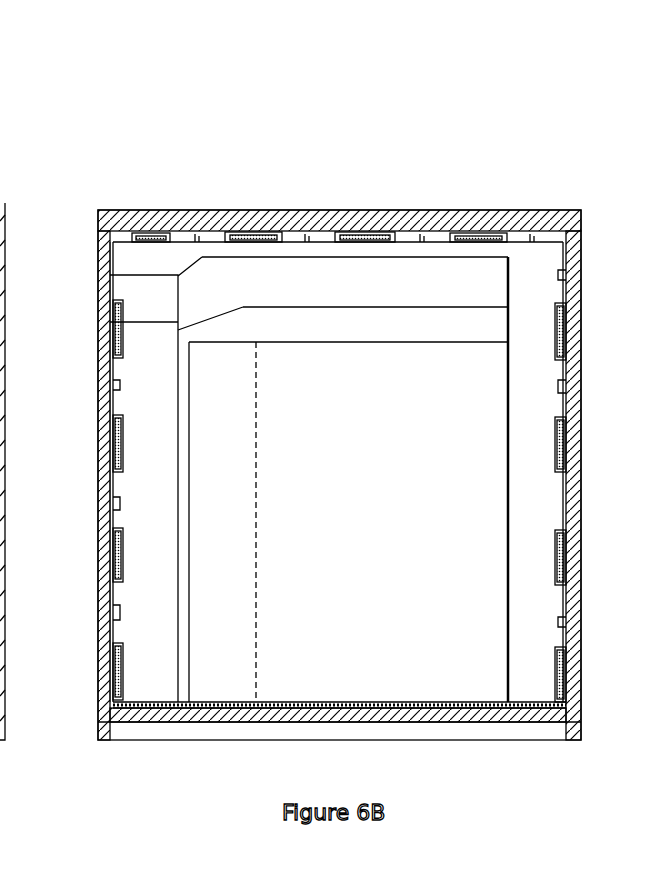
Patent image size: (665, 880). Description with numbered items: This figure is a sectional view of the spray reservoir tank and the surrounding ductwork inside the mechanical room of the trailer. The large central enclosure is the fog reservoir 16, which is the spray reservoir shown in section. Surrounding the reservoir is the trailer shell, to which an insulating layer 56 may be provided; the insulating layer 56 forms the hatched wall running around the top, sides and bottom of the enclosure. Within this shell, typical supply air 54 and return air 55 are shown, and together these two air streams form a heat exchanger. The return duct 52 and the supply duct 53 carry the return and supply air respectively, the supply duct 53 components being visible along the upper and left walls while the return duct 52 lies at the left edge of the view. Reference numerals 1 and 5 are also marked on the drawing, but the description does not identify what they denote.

The apparatus 1 is at (608, 118).
The right side module components 5 is at (542, 450).
The fog reservoir 16 is at (350, 494).
The return duct 52 is at (5, 500).
The supply duct 53 is at (302, 275).
The supply air 54 is at (110, 322).
The return air 55 is at (110, 385).
The insulating layer 56 is at (100, 210).